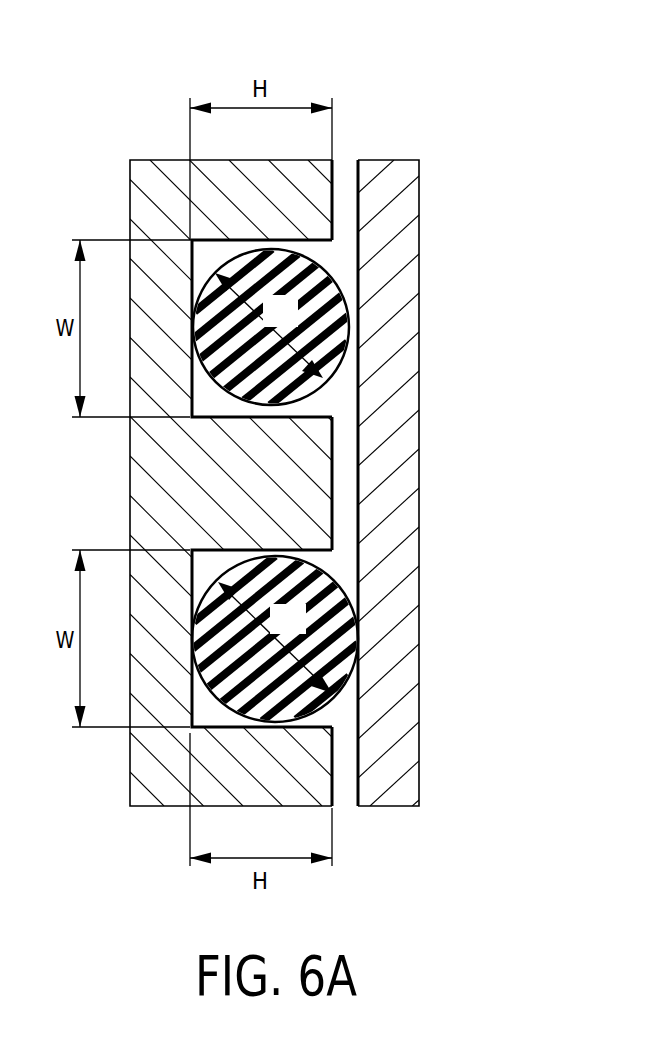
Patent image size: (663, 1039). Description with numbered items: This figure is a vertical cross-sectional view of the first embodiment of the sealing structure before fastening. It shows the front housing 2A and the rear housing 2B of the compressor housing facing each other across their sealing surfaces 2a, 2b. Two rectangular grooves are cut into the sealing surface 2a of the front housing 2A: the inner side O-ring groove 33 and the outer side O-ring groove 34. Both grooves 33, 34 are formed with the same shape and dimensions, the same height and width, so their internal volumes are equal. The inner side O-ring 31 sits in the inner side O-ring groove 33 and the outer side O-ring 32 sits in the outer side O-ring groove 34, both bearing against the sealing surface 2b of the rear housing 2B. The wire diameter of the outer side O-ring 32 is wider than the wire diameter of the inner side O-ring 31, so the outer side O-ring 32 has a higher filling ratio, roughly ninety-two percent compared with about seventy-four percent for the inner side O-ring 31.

The front housing 2A is at (150, 160).
The rear housing 2B is at (395, 160).
The sealing surface 2a is at (333, 482).
The sealing surface 2b is at (359, 231).
The inner side O-ring 31 is at (337, 330).
The outer side O-ring 32 is at (343, 618).
The inner side O-ring groove 33 is at (303, 417).
The outer side O-ring groove 34 is at (313, 723).